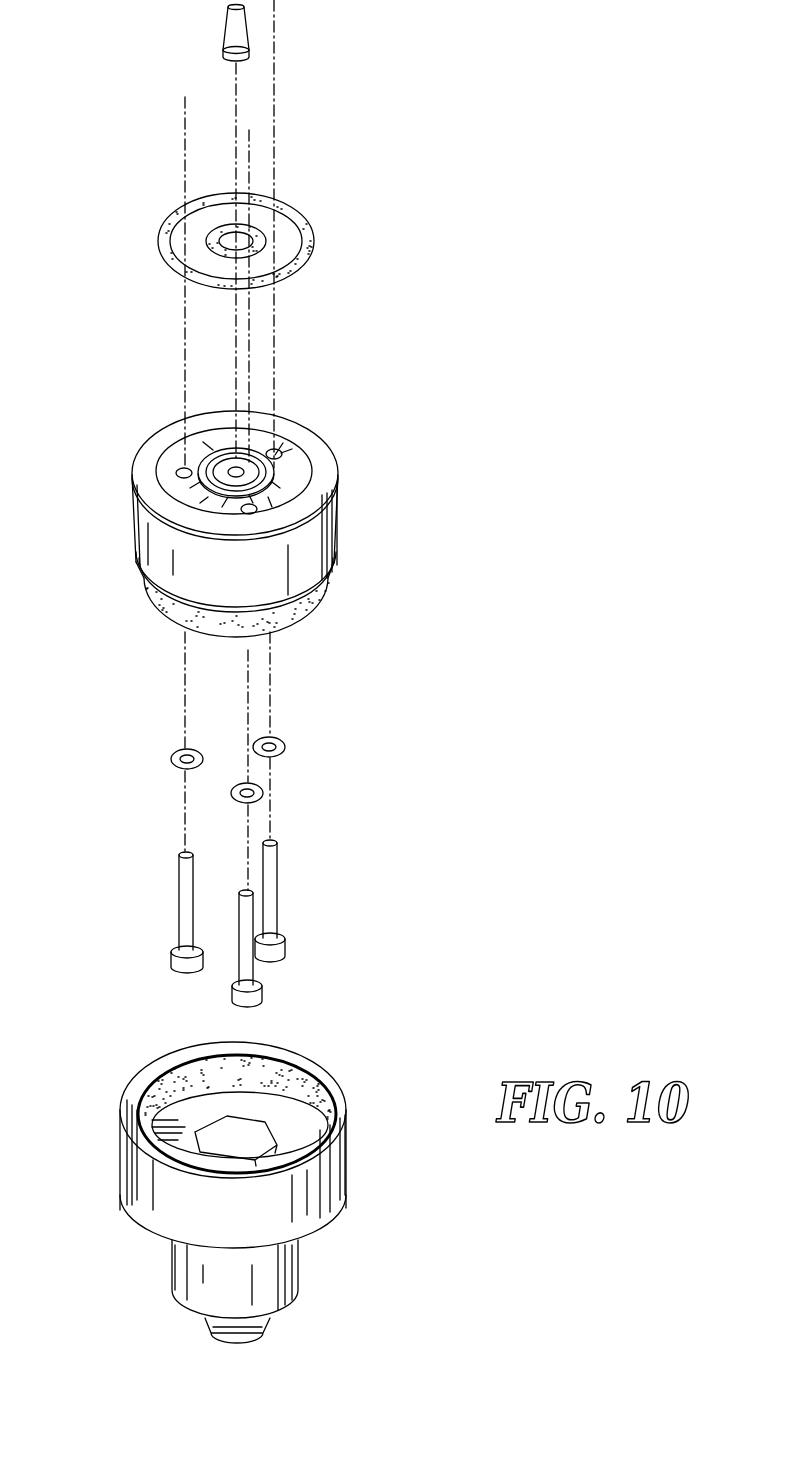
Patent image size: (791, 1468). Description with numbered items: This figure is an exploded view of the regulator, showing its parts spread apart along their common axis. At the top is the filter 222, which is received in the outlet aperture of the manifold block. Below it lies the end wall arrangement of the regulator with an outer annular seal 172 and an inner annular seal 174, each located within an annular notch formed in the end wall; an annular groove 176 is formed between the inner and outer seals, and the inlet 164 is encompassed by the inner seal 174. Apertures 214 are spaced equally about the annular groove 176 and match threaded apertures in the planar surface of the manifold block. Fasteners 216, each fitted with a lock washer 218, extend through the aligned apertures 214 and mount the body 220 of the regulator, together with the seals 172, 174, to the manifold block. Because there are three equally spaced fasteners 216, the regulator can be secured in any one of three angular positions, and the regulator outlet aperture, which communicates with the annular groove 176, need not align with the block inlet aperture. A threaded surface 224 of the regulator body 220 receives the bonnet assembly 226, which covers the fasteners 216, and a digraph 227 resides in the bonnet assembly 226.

The filter 222 is at (212, 40).
The outer annular seal 172 is at (318, 237).
The inner annular seal 174 is at (208, 253).
The body 220 is at (272, 534).
The annular groove 176 is at (280, 448).
The inlet 164 is at (213, 474).
The apertures 214 is at (177, 474).
The threaded surface 224 is at (165, 612).
The lock washers 218 is at (263, 792).
The fasteners 216 is at (283, 921).
The bonnet assembly 226 is at (195, 1192).
The digraph 227 is at (193, 1107).